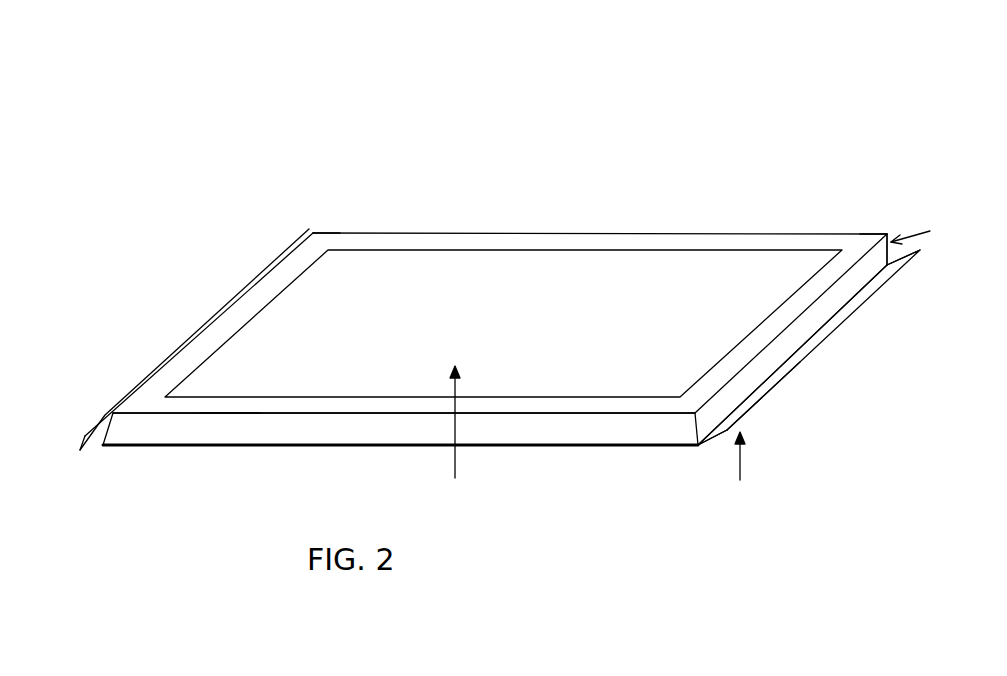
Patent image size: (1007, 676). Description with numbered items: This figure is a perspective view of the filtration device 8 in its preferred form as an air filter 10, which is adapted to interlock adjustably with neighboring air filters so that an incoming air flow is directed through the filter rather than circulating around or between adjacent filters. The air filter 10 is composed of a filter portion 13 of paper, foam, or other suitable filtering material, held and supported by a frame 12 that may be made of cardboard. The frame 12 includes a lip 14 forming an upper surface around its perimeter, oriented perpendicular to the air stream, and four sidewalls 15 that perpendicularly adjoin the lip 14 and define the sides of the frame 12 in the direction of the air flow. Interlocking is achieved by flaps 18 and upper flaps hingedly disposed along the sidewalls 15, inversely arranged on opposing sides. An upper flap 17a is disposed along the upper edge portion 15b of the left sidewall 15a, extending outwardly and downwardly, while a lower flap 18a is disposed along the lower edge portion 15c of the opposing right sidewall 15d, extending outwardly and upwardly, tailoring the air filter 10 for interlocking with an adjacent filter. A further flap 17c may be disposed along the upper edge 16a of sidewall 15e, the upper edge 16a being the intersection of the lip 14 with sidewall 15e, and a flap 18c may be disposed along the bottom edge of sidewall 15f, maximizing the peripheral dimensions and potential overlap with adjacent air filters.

The air filter 10 is at (516, 67).
The filtration device 8 is at (543, 164).
The frame 12 is at (361, 221).
The filter portion 13 is at (665, 268).
The lip 14 is at (553, 243).
The sidewalls 15 is at (700, 445).
The left sidewall 15a is at (64, 463).
The upper edge portion 15b is at (167, 357).
The lower edge portion 15c is at (718, 437).
The right sidewall 15d is at (775, 350).
The sidewall 15e is at (297, 448).
The sidewall 15f is at (889, 236).
The upper edge 16a is at (553, 415).
The upper flap 17a is at (115, 427).
The flap 17c is at (233, 428).
The flaps 18 is at (835, 323).
The lower flap 18a is at (763, 397).
The flap 18c is at (891, 262).